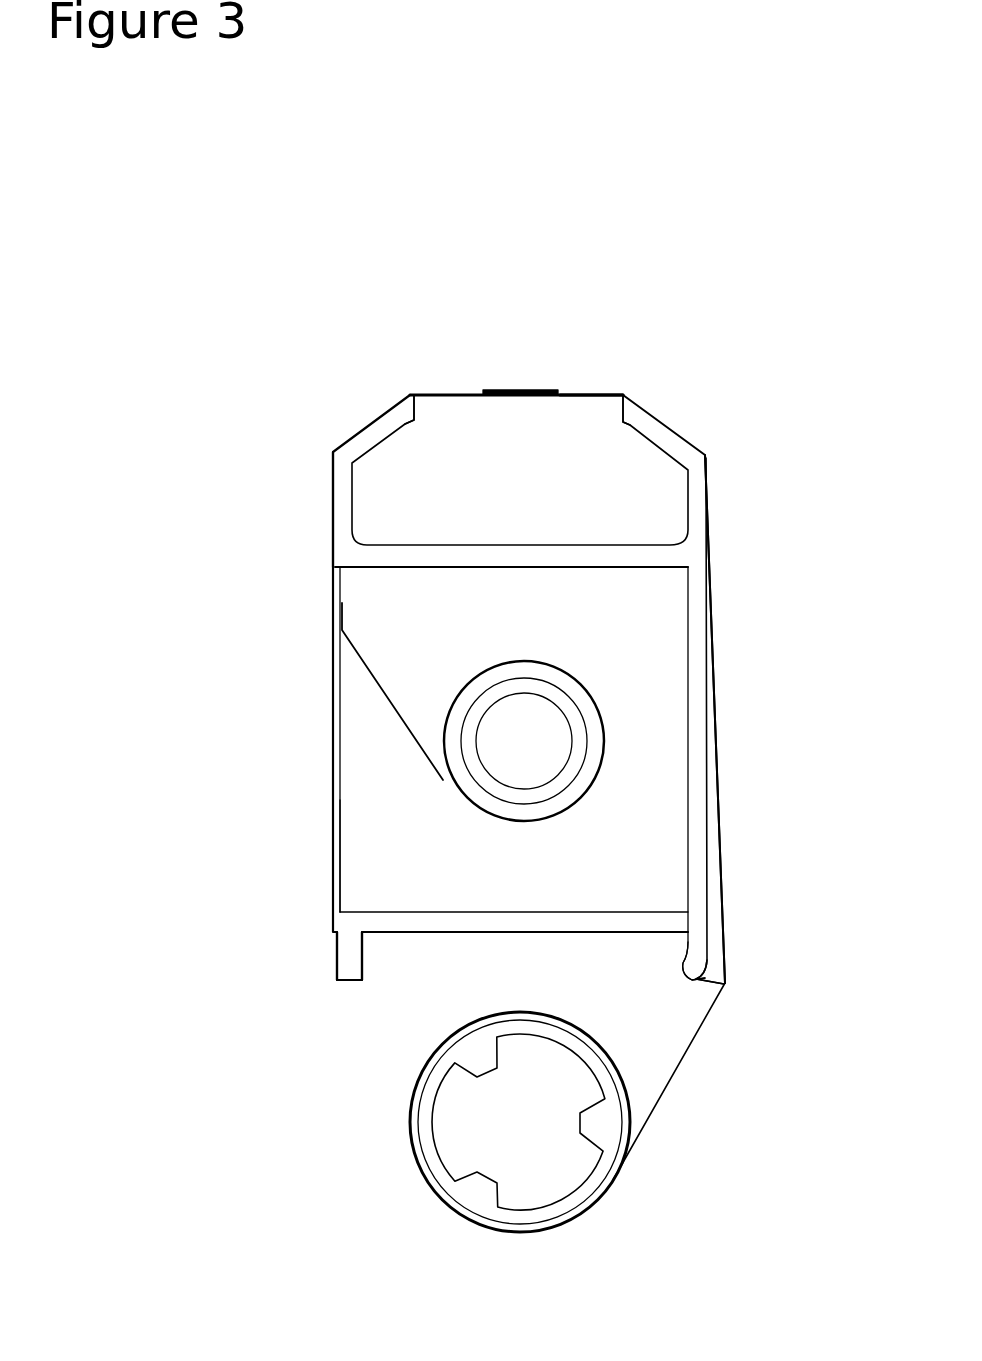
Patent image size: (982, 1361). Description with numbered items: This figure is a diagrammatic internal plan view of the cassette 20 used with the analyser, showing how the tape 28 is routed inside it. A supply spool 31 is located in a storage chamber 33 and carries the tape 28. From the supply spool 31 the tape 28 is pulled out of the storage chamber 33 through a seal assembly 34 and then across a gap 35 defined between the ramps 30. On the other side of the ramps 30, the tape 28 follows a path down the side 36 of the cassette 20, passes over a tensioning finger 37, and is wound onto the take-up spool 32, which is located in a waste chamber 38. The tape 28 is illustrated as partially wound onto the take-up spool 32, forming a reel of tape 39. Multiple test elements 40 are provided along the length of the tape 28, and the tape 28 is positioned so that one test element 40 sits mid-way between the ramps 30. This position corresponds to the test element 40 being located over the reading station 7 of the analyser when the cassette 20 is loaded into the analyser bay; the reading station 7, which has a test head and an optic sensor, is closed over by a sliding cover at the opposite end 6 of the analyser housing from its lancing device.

The opposite end 6 is at (642, 817).
The reading station 7 is at (523, 1125).
The cassette 20 is at (698, 488).
The tape 28 is at (392, 695).
The ramps 30 is at (400, 423).
The supply spool 31 is at (478, 767).
The take-up spool 32 is at (427, 1178).
The storage chamber 33 is at (369, 843).
The seal assembly 34 is at (333, 495).
The gap 35 is at (600, 378).
The side 36 is at (712, 612).
The tensioning finger 37 is at (692, 975).
The waste chamber 38 is at (410, 1007).
The reel of tape 39 is at (590, 1033).
The test element 40 is at (523, 390).